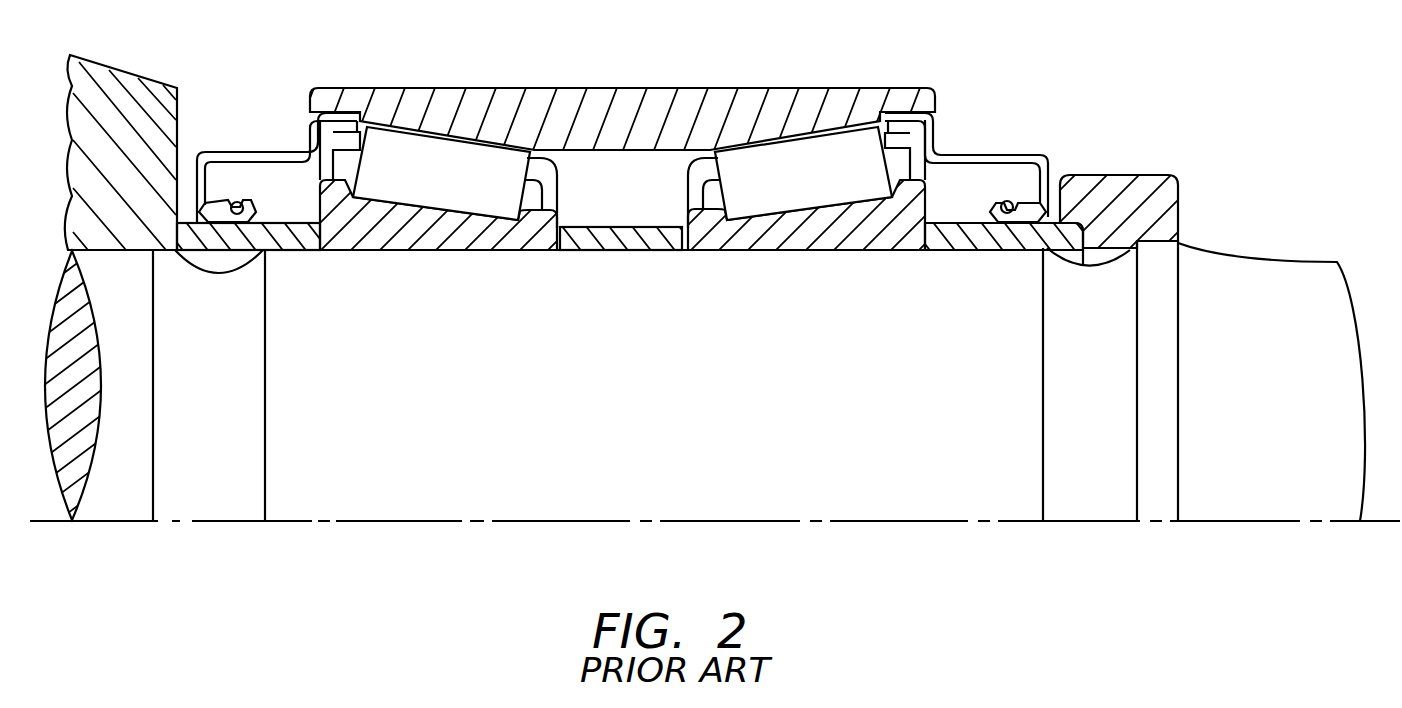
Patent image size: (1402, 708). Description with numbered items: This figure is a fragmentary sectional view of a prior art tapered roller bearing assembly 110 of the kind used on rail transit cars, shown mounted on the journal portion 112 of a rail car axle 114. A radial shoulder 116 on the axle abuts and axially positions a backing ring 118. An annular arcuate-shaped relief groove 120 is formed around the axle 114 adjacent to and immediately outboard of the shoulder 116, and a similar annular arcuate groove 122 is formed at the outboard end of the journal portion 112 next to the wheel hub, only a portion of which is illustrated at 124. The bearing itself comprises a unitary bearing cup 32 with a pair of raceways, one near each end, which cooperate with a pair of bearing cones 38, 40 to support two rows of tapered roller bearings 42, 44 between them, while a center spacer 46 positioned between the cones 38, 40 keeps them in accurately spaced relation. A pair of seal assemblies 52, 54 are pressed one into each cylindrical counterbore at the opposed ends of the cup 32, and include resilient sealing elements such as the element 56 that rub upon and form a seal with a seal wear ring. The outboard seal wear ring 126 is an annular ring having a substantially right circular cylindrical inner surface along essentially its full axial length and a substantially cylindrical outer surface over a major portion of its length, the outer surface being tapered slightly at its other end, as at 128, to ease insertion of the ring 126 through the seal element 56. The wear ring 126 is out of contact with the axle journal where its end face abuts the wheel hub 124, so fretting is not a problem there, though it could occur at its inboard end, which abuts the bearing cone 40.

The transit bearing assembly 110 is at (918, 63).
The journal portion 112 is at (651, 411).
The rail car axle 114 is at (1283, 257).
The radial shoulder 116 is at (1160, 500).
The backing ring 118 is at (1125, 175).
The relief groove 120 is at (1080, 495).
The annular arcuate groove 122 is at (203, 507).
The wheel hub 124 is at (132, 84).
The outboard seal wear ring 126 is at (260, 243).
The tapered end of outer surface 128 is at (284, 218).
The bearing cup 32 is at (650, 110).
The bearing cone 38 is at (868, 232).
The bearing cone 40 is at (380, 236).
The tapered roller bearings 42 is at (757, 202).
The tapered roller bearings 44 is at (460, 197).
The center spacer 46 is at (628, 240).
The seal assembly 52 is at (988, 152).
The seal assembly 54 is at (232, 154).
The resilient sealing element 56 is at (252, 213).